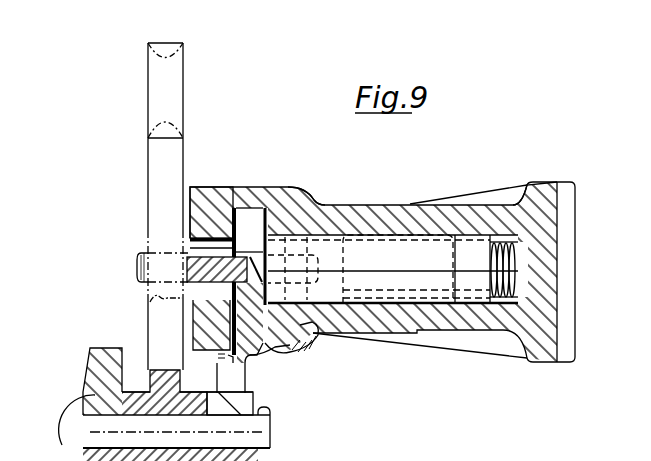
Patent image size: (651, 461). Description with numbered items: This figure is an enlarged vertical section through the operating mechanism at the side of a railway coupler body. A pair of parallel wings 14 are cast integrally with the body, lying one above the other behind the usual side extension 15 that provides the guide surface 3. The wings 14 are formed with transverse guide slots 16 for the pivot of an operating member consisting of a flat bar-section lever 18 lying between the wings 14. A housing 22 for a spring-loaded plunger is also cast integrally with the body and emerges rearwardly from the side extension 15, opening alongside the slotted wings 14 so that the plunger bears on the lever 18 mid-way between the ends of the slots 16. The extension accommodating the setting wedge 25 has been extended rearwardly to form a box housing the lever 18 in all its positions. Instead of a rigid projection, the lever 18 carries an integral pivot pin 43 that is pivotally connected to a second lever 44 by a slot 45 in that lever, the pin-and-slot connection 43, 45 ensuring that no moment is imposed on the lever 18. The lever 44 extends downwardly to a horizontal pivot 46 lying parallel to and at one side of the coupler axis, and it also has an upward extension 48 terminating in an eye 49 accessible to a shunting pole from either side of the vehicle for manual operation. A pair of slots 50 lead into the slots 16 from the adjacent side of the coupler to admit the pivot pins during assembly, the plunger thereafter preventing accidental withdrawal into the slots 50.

The guide surface 3 is at (566, 273).
The wings 14 is at (310, 203).
The side extension 15 is at (542, 193).
The guide slots 16 is at (244, 210).
The lever 18 is at (212, 228).
The housing 22 is at (397, 217).
The setting wedge 25 is at (360, 243).
The pivot pin 43 is at (137, 276).
The lever 44 is at (178, 378).
The slot 45 is at (150, 302).
The horizontal pivot 46 is at (255, 432).
The upward extension 48 is at (147, 183).
The eye 49 is at (176, 112).
The slots 50 is at (305, 200).